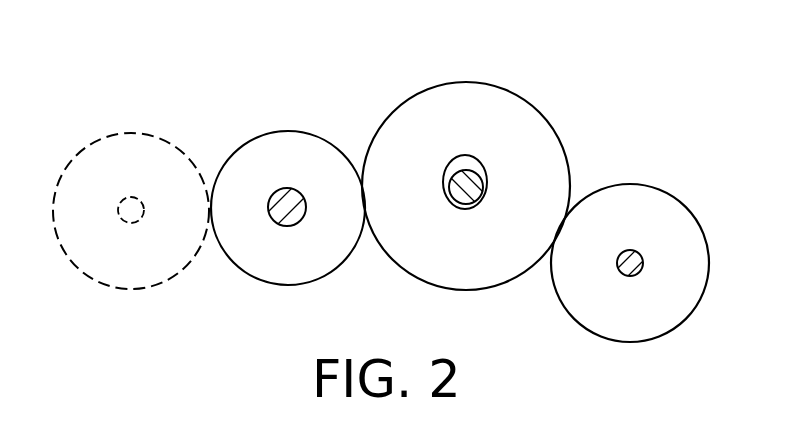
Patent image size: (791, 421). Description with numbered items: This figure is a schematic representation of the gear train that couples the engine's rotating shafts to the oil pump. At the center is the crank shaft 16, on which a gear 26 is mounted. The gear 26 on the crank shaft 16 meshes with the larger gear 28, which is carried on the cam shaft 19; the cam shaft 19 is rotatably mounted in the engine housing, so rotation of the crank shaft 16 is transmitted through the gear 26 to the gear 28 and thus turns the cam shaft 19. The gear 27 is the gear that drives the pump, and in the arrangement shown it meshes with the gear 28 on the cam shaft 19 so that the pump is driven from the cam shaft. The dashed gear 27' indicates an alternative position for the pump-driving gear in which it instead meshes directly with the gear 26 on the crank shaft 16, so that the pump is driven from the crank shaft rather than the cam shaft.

The alternate position of roller 27' is at (131, 185).
The gear 26 is at (303, 150).
The crank shaft 16 is at (286, 188).
The gear 28 is at (437, 108).
The cam shaft 19 is at (467, 178).
The gear 27 is at (630, 244).